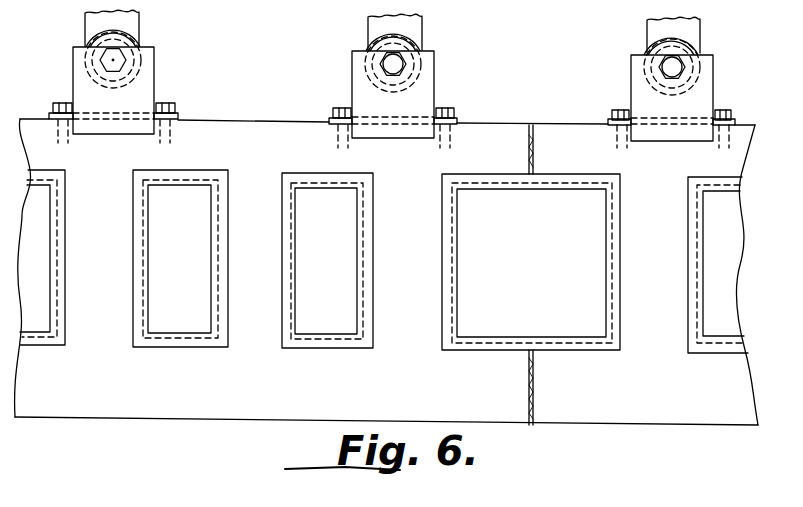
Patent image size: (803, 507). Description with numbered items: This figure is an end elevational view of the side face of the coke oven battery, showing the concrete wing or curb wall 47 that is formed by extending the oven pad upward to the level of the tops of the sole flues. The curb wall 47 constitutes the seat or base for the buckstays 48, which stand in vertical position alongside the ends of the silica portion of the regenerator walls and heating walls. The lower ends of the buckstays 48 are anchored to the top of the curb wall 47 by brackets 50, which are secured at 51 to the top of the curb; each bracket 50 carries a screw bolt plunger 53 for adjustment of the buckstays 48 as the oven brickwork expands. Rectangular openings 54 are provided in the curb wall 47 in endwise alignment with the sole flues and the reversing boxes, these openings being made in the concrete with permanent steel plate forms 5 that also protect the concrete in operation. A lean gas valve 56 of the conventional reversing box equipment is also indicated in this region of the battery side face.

The permanent steel plate form 5 is at (207, 286).
The wing or curb wall 47 is at (386, 272).
The buckstay 48 is at (133, 23).
The bracket 50 is at (145, 73).
The securing point 51 is at (62, 103).
The screw bolt plunger 53 is at (112, 61).
The rectangular opening 54 is at (382, 261).
The lean gas valve 56 is at (565, 123).